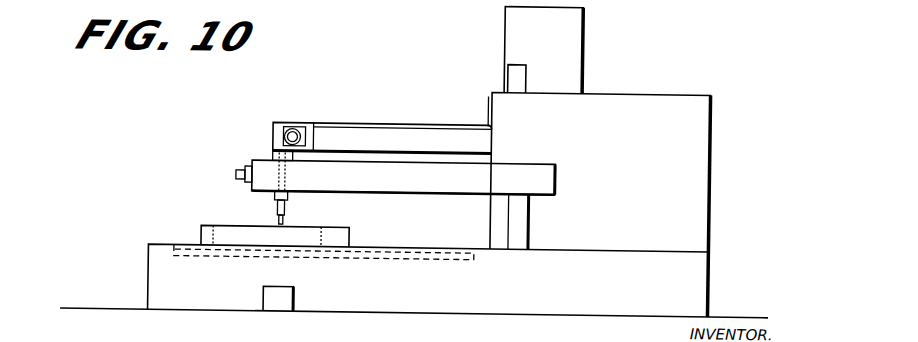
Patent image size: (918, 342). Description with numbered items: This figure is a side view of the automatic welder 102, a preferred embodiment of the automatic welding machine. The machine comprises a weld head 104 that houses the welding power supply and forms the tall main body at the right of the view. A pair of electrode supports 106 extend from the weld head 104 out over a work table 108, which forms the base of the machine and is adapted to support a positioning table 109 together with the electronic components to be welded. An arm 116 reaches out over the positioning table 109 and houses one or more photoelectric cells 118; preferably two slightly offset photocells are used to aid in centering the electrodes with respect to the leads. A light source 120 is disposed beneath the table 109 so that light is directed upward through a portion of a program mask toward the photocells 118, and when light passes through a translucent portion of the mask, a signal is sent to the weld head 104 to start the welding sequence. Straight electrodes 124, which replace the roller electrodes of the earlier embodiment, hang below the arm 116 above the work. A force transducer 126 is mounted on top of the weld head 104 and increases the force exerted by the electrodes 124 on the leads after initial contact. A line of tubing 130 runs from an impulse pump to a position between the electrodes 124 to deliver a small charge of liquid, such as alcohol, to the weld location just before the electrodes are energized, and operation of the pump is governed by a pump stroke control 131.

The automatic welder 102 is at (650, 184).
The weld head 104 is at (687, 92).
The electrode supports 106 is at (469, 99).
The work table 108 is at (711, 271).
The positioning table 109 is at (208, 229).
The arm 116 is at (440, 186).
The photoelectric cells 118 is at (266, 160).
The light source 120 is at (271, 300).
The straight electrodes 124 is at (289, 208).
The force transducer 126 is at (581, 51).
The line of tubing 130 is at (383, 120).
The pump stroke control 131 is at (500, 73).